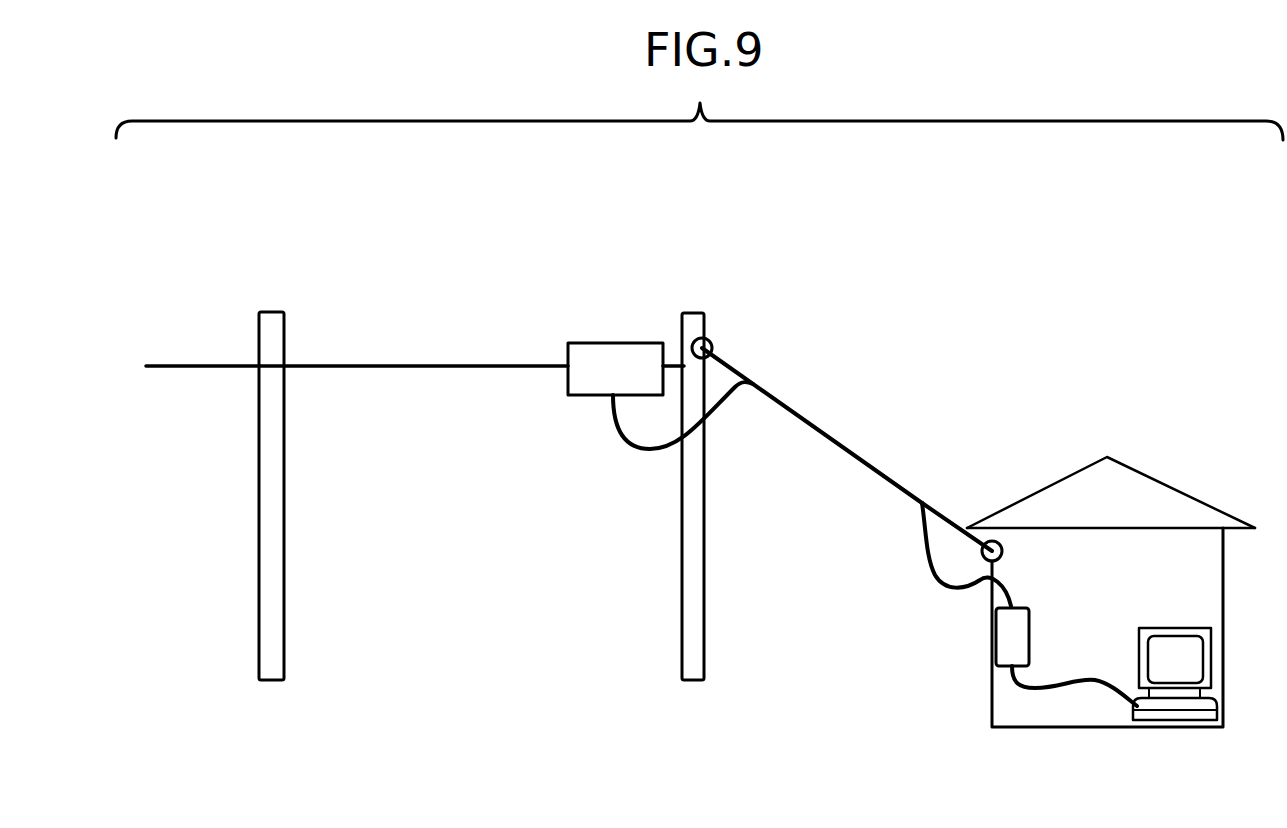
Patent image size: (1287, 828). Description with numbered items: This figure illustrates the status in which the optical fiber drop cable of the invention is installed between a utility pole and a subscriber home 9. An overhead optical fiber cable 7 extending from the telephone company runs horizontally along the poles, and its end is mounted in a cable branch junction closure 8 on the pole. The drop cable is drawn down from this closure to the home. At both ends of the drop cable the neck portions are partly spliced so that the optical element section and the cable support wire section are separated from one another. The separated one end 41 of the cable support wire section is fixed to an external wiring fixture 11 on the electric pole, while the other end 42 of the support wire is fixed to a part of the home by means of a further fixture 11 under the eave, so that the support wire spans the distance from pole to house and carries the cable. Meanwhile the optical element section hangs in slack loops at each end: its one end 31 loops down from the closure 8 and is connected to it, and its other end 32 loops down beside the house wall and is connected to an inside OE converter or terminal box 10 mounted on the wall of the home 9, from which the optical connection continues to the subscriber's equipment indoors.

The overhead optical fiber cable 7 is at (424, 362).
The cable branch junction closure 8 is at (605, 340).
The subscriber home 9 is at (1168, 482).
The terminal box 10 is at (993, 632).
The fixture 11 is at (701, 336).
The one end of the optical element section 31 is at (626, 443).
The other end of the optical element section 32 is at (928, 566).
The one end of the cable support wire section 41 is at (720, 357).
The other end of the cable support wire section 42 is at (931, 507).